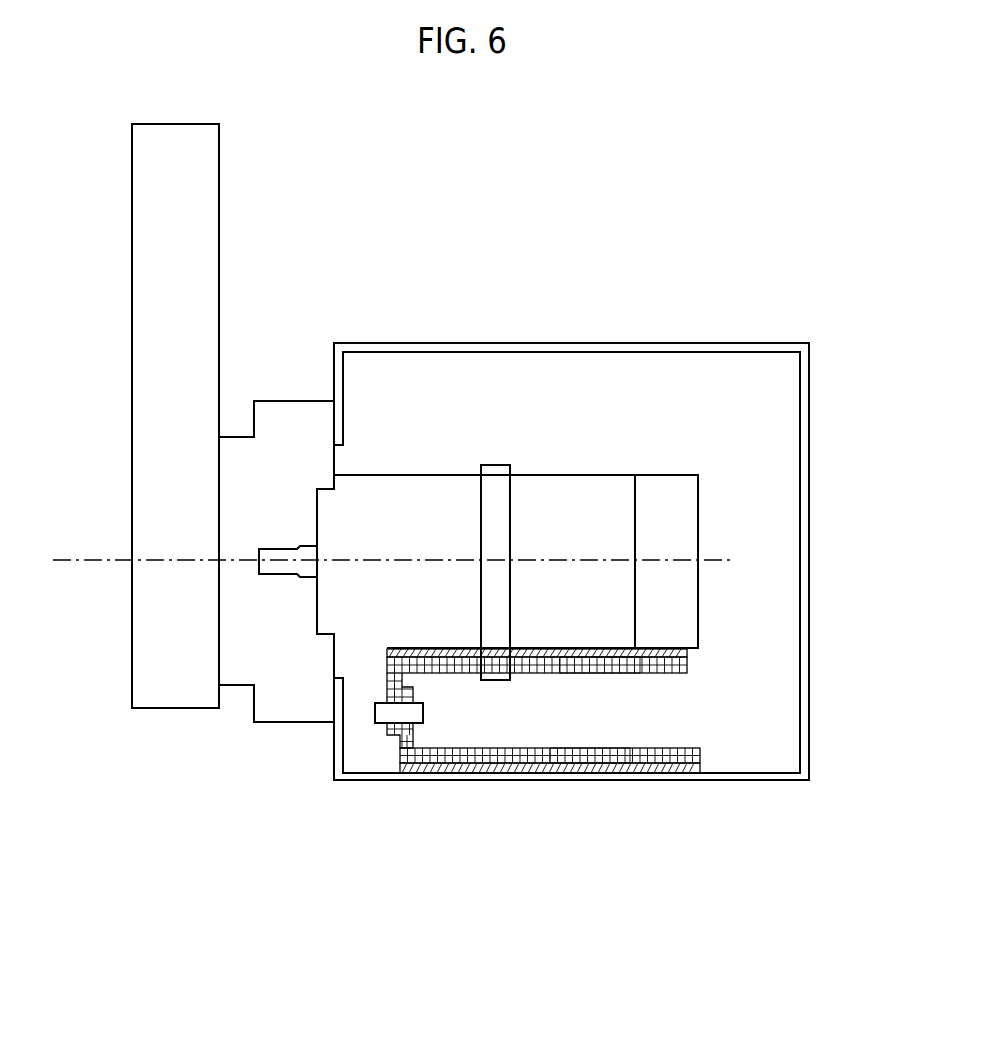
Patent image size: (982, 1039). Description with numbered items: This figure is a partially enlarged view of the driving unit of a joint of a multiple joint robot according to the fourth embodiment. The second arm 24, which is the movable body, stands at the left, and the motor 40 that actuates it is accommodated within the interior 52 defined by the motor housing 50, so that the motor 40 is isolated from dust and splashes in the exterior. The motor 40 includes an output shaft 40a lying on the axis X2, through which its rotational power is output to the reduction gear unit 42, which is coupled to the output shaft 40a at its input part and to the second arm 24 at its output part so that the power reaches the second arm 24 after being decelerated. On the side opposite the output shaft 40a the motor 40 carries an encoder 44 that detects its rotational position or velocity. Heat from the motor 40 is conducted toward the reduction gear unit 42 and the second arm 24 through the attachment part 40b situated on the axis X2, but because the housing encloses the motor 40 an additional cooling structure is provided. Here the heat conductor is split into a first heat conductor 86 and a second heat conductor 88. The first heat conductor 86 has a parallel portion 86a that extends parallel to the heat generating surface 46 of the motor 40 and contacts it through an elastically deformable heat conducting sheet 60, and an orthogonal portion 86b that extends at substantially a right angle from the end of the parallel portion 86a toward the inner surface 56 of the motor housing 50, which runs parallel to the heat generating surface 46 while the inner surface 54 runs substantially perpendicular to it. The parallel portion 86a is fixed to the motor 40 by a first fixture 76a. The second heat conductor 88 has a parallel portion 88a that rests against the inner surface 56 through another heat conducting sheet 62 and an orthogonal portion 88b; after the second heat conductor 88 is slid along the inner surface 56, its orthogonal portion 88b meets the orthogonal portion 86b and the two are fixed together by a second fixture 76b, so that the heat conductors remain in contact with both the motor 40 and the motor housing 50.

The axis X2 is at (86, 560).
The second arm 24 is at (219, 200).
The reduction gear unit 42 is at (298, 401).
The motor housing 50 is at (425, 343).
The interior 52 is at (389, 391).
The inner surface 54 is at (797, 503).
The inner surface 56 is at (712, 772).
The motor 40 is at (570, 475).
The output shaft 40a is at (288, 577).
The attachment part 40b is at (323, 618).
The encoder 44 is at (668, 475).
The heat generating surface 46 is at (603, 657).
The heat conducting sheet 60 is at (688, 653).
The heat conducting sheet 62 is at (543, 773).
The first fixture 76a is at (495, 465).
The second fixture 76b is at (372, 710).
The first heat conductor 86 is at (688, 667).
The parallel portion 86a is at (598, 668).
The orthogonal portion 86b is at (402, 680).
The second heat conductor 88 is at (630, 763).
The parallel portion 88a is at (588, 747).
The orthogonal portion 88b is at (413, 738).